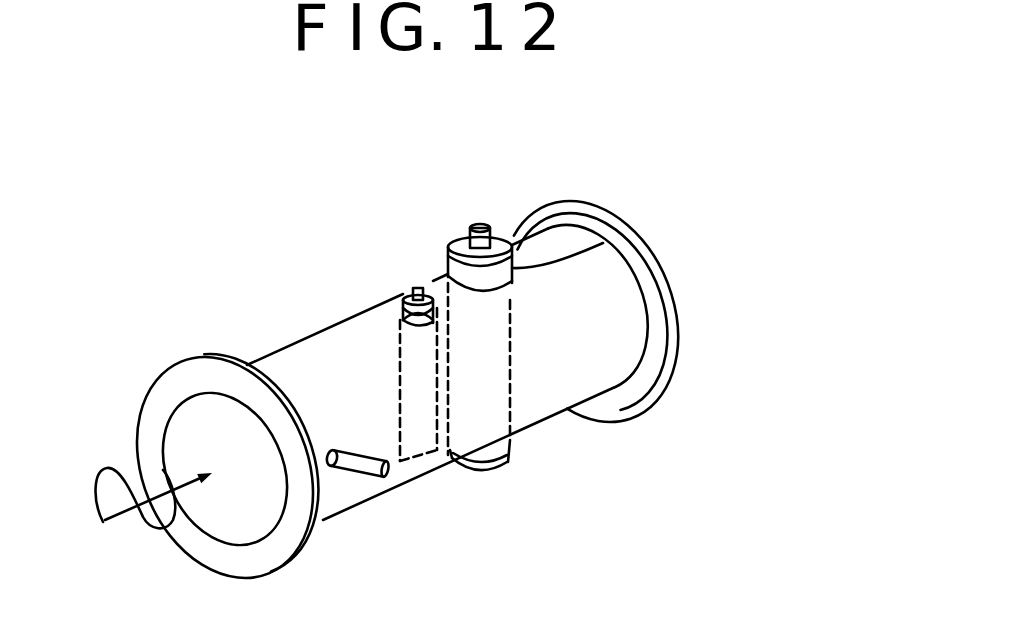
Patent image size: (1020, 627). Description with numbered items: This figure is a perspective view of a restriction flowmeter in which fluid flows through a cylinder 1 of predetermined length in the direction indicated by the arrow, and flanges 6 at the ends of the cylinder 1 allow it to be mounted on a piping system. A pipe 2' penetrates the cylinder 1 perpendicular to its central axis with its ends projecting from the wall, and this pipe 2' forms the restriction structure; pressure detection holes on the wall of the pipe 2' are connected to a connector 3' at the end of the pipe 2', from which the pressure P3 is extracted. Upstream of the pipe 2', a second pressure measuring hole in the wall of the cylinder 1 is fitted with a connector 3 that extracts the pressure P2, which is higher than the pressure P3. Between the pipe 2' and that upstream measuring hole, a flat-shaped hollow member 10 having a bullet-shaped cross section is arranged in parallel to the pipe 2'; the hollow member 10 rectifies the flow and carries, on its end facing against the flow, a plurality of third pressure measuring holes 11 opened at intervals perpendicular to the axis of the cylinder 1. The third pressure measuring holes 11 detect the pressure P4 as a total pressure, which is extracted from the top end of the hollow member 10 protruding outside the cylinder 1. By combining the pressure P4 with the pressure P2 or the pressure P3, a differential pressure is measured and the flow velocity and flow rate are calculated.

The cylinder 1 is at (295, 363).
The pipe 2' is at (595, 302).
The connector 3 is at (357, 506).
The connector 3' is at (510, 311).
The flange 6 is at (157, 402).
The flat-shaped hollow member 10 is at (397, 377).
The third pressure measuring holes 11 is at (398, 333).
The pressure P2 is at (383, 467).
The pressure P3 is at (478, 220).
The pressure P4 is at (417, 288).